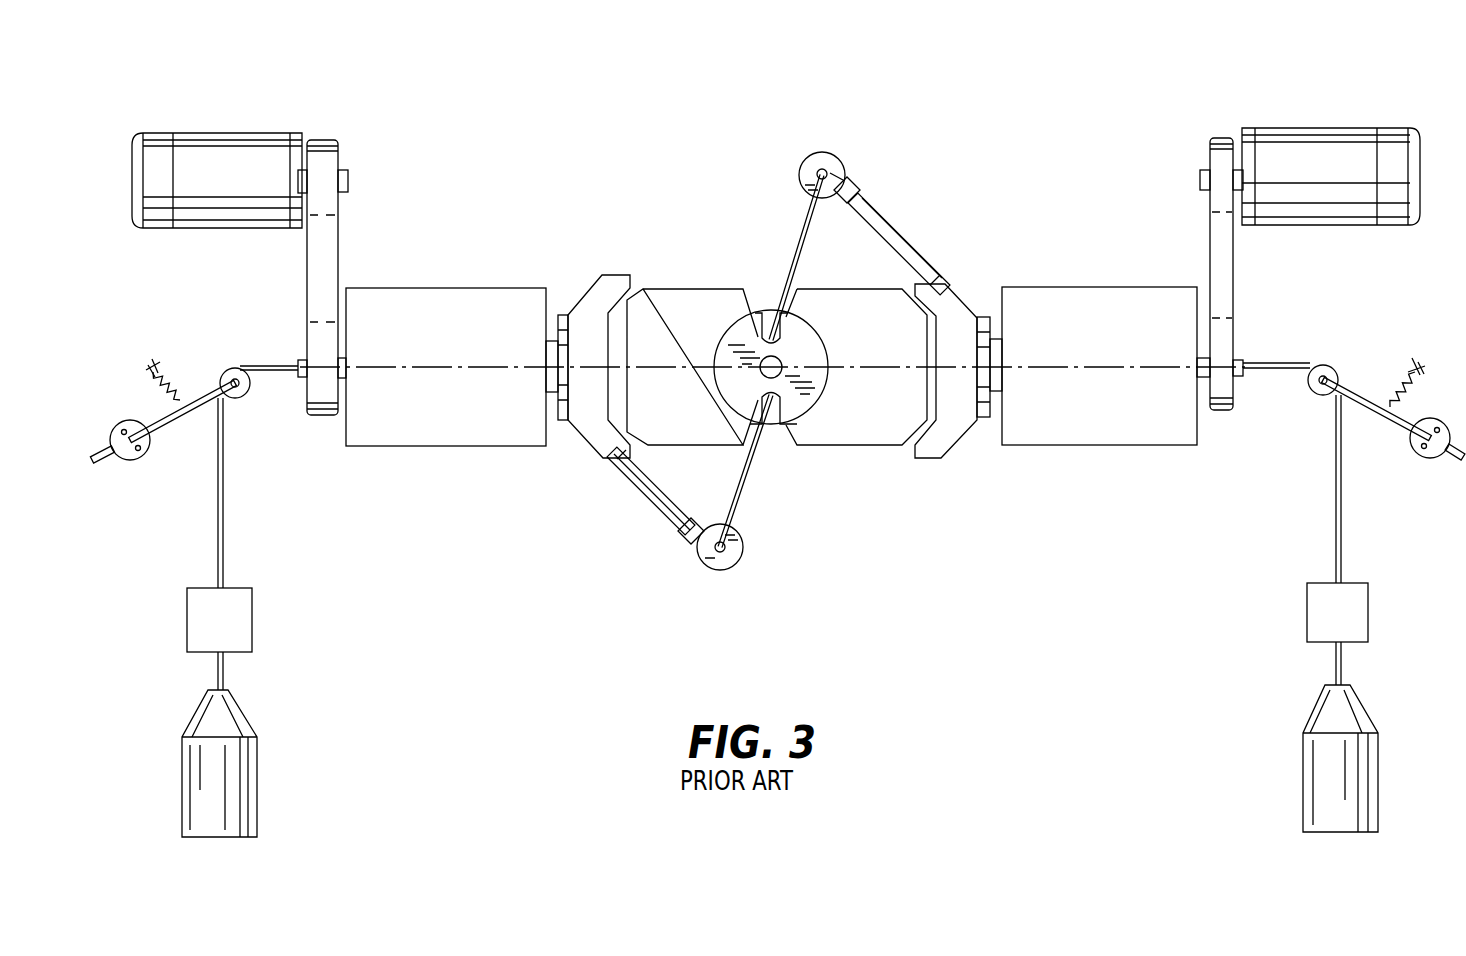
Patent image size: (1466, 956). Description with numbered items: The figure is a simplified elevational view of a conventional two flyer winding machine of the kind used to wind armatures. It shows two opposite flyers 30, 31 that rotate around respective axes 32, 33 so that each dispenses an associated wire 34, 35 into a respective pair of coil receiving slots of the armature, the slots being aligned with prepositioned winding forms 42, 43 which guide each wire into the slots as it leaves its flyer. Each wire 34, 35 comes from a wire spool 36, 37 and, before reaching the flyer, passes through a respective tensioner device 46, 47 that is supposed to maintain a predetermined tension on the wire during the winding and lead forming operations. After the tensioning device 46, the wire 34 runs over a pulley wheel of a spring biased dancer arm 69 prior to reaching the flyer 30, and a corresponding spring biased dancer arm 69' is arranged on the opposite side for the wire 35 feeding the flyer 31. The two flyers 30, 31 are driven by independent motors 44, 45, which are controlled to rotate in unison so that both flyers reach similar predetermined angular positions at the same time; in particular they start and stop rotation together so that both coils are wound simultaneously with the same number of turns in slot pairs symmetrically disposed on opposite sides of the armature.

The flyer 30 is at (648, 497).
The flyer 31 is at (890, 222).
The axis 32 is at (677, 367).
The axis 33 is at (857, 367).
The wire 34 is at (742, 505).
The wire 35 is at (800, 208).
The wire spool 36 is at (253, 753).
The wire spool 37 is at (1312, 760).
The winding form 42 is at (650, 288).
The winding form 43 is at (893, 450).
The motor 44 is at (213, 140).
The motor 45 is at (1315, 135).
The tensioner device 46 is at (242, 613).
The tensioner device 47 is at (1315, 610).
The spring biased dancer arm 69 is at (170, 390).
The spring biased dancer arm 69' is at (1386, 391).